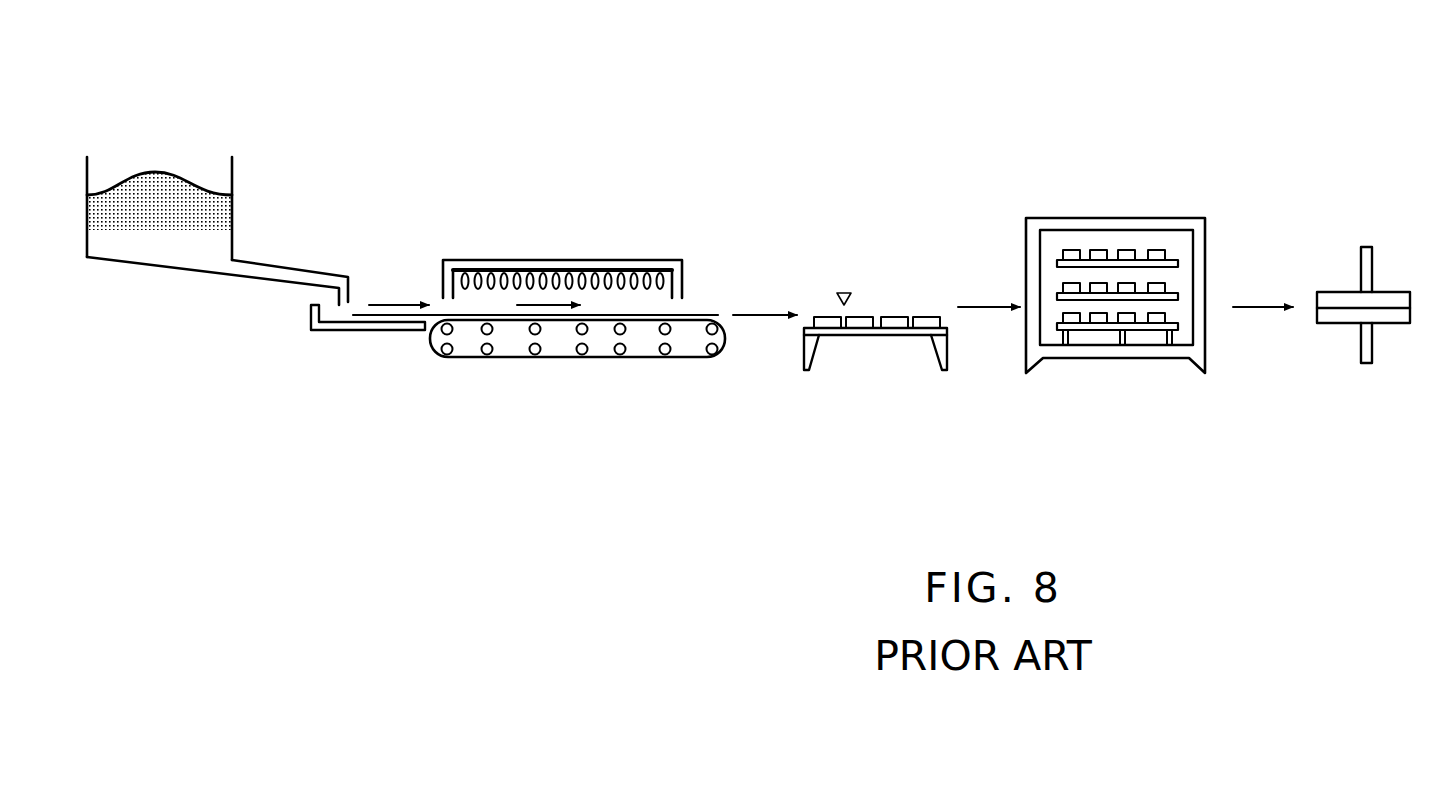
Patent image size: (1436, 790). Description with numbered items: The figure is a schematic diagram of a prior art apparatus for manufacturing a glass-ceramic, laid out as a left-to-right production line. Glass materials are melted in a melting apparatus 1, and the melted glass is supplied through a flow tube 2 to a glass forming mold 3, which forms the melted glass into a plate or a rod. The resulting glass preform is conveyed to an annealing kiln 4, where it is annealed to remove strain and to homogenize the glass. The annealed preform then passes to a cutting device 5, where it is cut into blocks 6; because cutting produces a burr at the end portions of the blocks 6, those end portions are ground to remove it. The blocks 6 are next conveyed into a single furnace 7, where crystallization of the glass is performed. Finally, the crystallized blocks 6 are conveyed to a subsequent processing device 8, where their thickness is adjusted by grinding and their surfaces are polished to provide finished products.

The melting apparatus 1 is at (233, 177).
The flow tube 2 is at (317, 270).
The glass forming mold 3 is at (353, 331).
The annealing kiln 4 is at (612, 263).
The cutting device 5 is at (882, 337).
The blocks 6 is at (820, 316).
The single furnace 7 is at (1090, 218).
The subsequent processing device 8 is at (1387, 298).